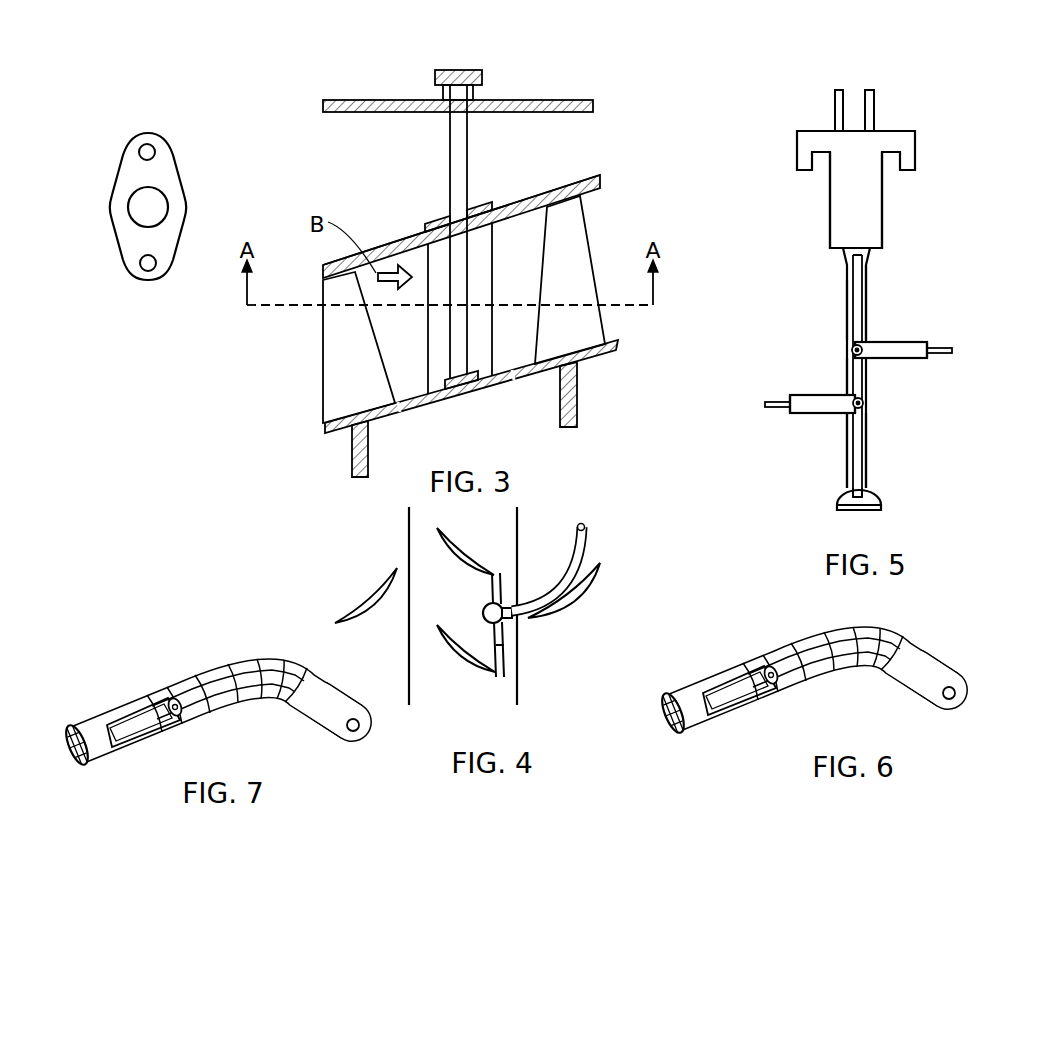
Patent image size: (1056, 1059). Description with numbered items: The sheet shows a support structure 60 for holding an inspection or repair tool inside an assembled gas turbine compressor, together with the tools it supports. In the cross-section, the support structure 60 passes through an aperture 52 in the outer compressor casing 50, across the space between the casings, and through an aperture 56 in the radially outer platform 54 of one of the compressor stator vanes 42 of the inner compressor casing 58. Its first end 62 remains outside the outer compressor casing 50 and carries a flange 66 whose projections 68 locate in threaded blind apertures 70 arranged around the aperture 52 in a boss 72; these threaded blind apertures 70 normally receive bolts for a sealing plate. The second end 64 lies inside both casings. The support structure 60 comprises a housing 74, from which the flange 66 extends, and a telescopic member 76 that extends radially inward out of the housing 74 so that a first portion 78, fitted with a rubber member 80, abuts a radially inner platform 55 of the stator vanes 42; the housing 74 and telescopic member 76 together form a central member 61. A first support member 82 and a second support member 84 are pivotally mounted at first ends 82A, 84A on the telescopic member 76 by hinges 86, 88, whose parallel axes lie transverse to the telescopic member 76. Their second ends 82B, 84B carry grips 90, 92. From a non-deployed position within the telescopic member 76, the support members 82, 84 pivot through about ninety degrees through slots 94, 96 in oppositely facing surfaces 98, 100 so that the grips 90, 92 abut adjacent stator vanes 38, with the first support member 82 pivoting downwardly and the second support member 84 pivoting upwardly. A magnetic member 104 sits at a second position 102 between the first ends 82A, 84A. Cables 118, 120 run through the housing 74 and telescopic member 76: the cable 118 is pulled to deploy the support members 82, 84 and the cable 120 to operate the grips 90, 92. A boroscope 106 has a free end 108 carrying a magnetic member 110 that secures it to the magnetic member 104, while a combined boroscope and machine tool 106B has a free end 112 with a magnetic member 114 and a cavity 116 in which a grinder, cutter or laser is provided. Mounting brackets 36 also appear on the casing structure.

In FIG. 3, the mounting bracket 36 is at (352, 463).
In FIG. 3, the stator vanes 38 is at (608, 270).
In FIG. 4, the stator vanes 38 is at (365, 600).
In FIG. 3, the compressor stator vanes 42 is at (412, 240).
In FIG. 4, the compressor stator vanes 42 is at (452, 545).
In FIG. 3, the outer compressor casing 50 is at (572, 100).
In FIG. 3, the aperture 52 is at (158, 205).
In FIG. 3, the radially outer platform 54 is at (486, 205).
In FIG. 3, the radially inner platform 55 is at (479, 392).
In FIG. 3, the aperture 56 is at (447, 218).
In FIG. 3, the inner compressor casing 58 is at (591, 176).
In FIG. 3, the support structure 60 is at (469, 158).
In FIG. 4, the support structure 60 is at (483, 610).
In FIG. 5, the support structure 60 is at (906, 222).
In FIG. 5, the central member 61 is at (964, 265).
In FIG. 5, the first end 62 is at (906, 131).
In FIG. 5, the second end 64 is at (866, 480).
In FIG. 5, the flange 66 is at (810, 131).
In FIG. 5, the projections 68 is at (797, 165).
In FIG. 3, the threaded blind apertures 70 is at (153, 148).
In FIG. 3, the boss 72 is at (128, 238).
In FIG. 5, the housing 74 is at (875, 192).
In FIG. 5, the telescopic member 76 is at (862, 270).
In FIG. 5, the first portion 78 is at (878, 505).
In FIG. 5, the rubber member 80 is at (838, 505).
In FIG. 4, the first support member 82 is at (502, 582).
In FIG. 5, the first support member 82 is at (895, 343).
In FIG. 5, the first end of first support member 82A is at (852, 345).
In FIG. 5, the second end of first support member 82B is at (930, 345).
In FIG. 4, the second support member 84 is at (502, 660).
In FIG. 5, the second support member 84 is at (815, 396).
In FIG. 5, the first end of second support member 84A is at (866, 408).
In FIG. 5, the second end of second support member 84B is at (790, 410).
In FIG. 5, the hinge 86 is at (864, 352).
In FIG. 5, the hinge 88 is at (868, 458).
In FIG. 5, the grip 90 is at (952, 352).
In FIG. 5, the grip 92 is at (768, 402).
In FIG. 5, the slot 94 is at (868, 315).
In FIG. 5, the slot 96 is at (848, 455).
In FIG. 5, the surface 98 is at (870, 297).
In FIG. 5, the surface 100 is at (846, 300).
In FIG. 5, the second position 102 is at (848, 372).
In FIG. 5, the magnetic member 104 is at (866, 402).
In FIG. 4, the boroscope 106 is at (588, 530).
In FIG. 6, the boroscope 106 is at (925, 655).
In FIG. 7, the combined boroscope and machine tool 106B is at (320, 703).
In FIG. 4, the free end 108 is at (525, 612).
In FIG. 6, the free end 108 is at (683, 692).
In FIG. 4, the magnetic member 110 is at (504, 642).
In FIG. 6, the magnetic member 110 is at (660, 720).
In FIG. 7, the free end 112 is at (95, 712).
In FIG. 7, the magnetic member 114 is at (92, 762).
In FIG. 7, the cavity 116 is at (152, 720).
In FIG. 5, the cable 118 is at (838, 88).
In FIG. 5, the cable 120 is at (870, 88).